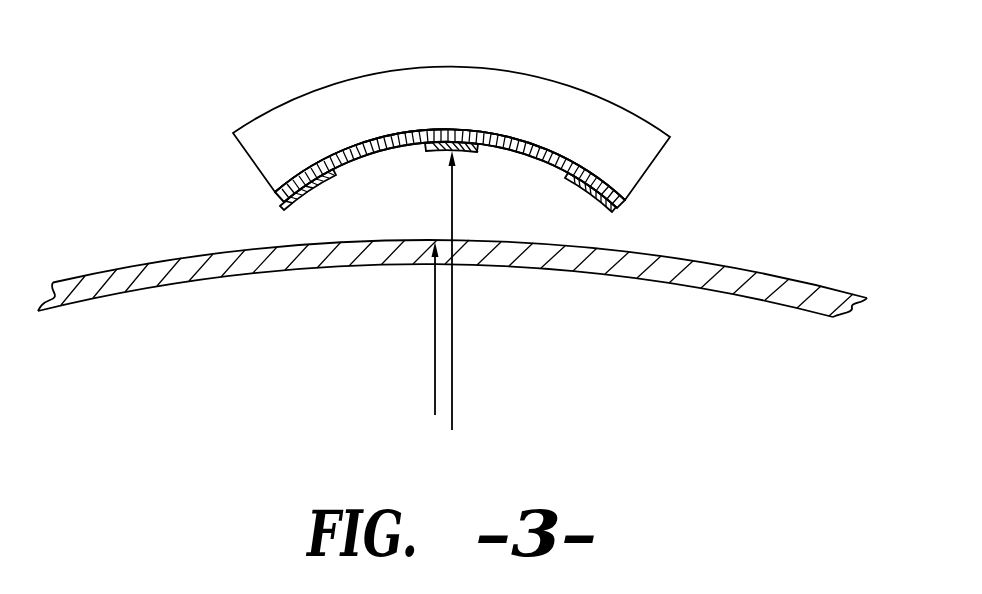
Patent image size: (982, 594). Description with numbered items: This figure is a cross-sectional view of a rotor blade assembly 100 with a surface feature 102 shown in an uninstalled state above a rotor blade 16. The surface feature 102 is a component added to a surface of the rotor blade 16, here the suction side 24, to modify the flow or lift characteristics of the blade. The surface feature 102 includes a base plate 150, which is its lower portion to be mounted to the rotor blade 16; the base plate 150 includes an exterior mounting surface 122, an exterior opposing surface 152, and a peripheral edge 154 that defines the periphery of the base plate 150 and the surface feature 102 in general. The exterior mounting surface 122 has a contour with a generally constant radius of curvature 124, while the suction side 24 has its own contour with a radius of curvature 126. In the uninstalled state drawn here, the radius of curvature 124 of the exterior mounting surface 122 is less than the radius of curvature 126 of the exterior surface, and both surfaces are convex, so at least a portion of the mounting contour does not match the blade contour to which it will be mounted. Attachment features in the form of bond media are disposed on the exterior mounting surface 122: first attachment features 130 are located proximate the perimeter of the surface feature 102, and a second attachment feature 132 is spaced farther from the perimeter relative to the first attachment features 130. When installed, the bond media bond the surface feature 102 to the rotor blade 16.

The rotor blade assembly 100 is at (753, 118).
The surface feature 102 is at (564, 65).
The rotor blade 16 is at (802, 263).
The suction side 24 is at (722, 265).
The exterior mounting surface 122 is at (357, 165).
The radius of curvature 124 is at (455, 343).
The radius of curvature 126 is at (433, 327).
The first attachment feature 130 is at (297, 197).
The second attachment feature 132 is at (468, 157).
The base plate 150 is at (432, 130).
The exterior opposing surface 152 is at (381, 136).
The peripheral edge 154 is at (275, 196).